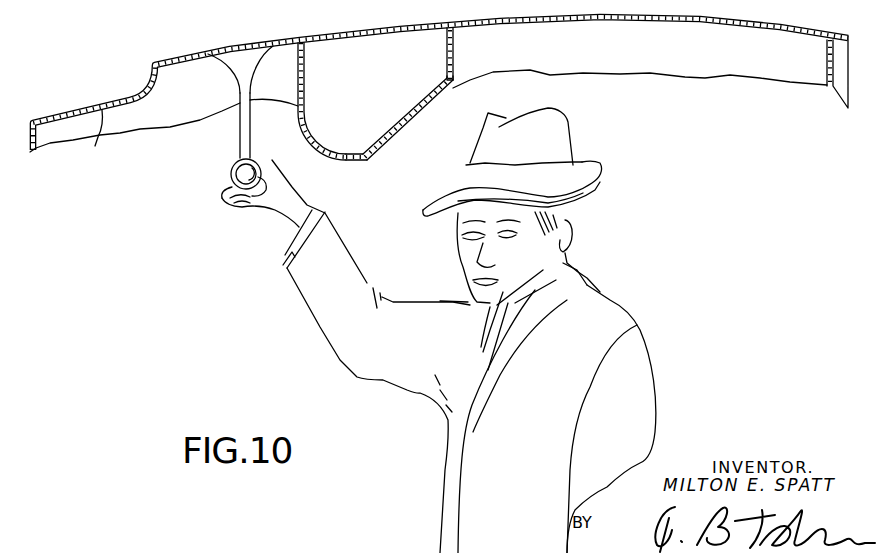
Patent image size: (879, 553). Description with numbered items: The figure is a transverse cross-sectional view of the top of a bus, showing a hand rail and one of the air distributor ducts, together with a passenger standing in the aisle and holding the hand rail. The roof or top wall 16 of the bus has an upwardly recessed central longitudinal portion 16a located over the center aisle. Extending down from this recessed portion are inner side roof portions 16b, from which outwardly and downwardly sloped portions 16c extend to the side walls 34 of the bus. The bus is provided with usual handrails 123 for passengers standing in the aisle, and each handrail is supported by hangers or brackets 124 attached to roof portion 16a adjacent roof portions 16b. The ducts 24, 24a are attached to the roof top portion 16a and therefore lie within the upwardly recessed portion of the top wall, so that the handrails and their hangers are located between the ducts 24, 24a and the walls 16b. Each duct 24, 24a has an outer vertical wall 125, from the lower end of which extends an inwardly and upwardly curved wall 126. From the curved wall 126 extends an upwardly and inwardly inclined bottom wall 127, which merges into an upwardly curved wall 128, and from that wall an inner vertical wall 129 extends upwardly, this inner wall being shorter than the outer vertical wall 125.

The top wall 16 is at (178, 139).
The upwardly recessed central longitudinal portion 16a is at (194, 62).
The inner side roof portions 16b is at (160, 84).
The sloped portions 16c is at (112, 142).
The side walls 34 is at (38, 137).
The duct 24 is at (452, 92).
The duct 24a is at (833, 103).
The handrail 123 is at (244, 175).
The hanger or bracket 124 is at (250, 115).
The outer vertical wall 125 is at (298, 65).
The inwardly and upwardly curved wall 126 is at (345, 157).
The upwardly and inwardly inclined bottom wall 127 is at (405, 124).
The upwardly curved wall 128 is at (446, 80).
The inner vertical wall 129 is at (456, 46).